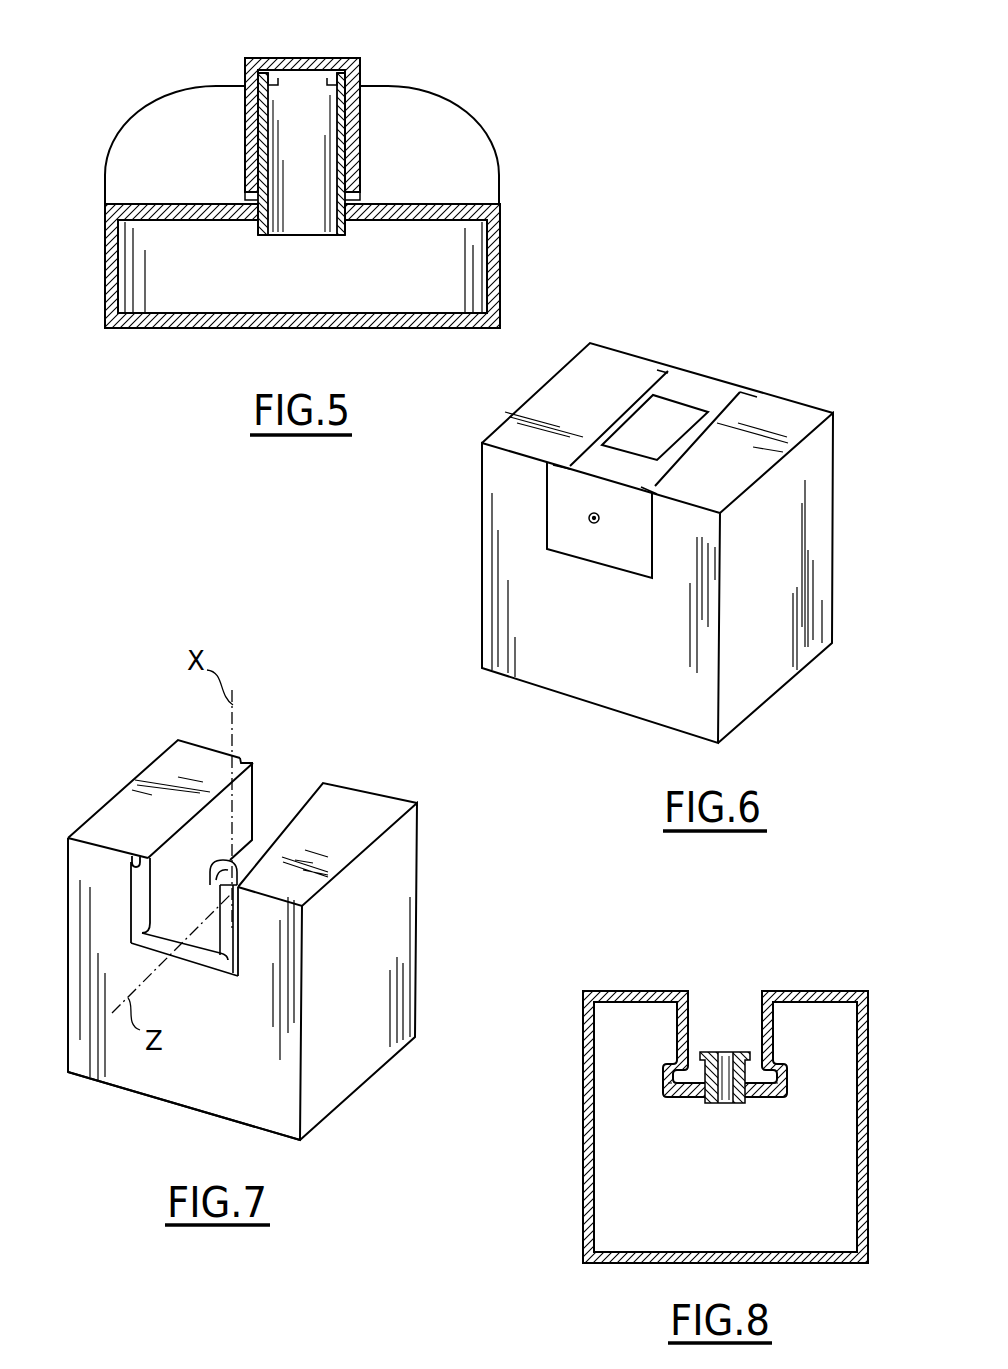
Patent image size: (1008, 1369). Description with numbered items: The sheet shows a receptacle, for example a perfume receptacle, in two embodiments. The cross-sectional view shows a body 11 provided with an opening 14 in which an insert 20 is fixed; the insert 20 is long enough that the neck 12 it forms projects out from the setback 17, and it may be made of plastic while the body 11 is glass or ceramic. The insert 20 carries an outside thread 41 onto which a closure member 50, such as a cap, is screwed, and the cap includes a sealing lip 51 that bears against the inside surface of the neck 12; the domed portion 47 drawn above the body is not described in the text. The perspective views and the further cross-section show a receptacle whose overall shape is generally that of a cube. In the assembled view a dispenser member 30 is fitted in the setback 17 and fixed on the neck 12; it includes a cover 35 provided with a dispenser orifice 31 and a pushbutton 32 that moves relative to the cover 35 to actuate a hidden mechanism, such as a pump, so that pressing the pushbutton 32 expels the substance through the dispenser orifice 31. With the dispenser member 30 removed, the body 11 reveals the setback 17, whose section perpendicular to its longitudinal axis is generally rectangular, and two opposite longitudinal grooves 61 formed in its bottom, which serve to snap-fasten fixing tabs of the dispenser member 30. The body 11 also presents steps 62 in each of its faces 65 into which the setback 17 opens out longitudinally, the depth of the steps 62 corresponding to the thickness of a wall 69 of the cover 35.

In FIG. 5, the body 11 is at (493, 257).
In FIG. 6, the body 11 is at (510, 562).
In FIG. 7, the body 11 is at (287, 1100).
In FIG. 8, the body 11 is at (587, 1183).
In FIG. 7, the neck 12 is at (200, 877).
In FIG. 8, the neck 12 is at (723, 1052).
In FIG. 5, the opening 14 is at (256, 222).
In FIG. 7, the setback 17 is at (187, 925).
In FIG. 8, the setback 17 is at (705, 1013).
In FIG. 5, the insert 20 is at (343, 225).
In FIG. 6, the dispenser member 30 is at (583, 453).
In FIG. 6, the dispenser orifice 31 is at (593, 525).
In FIG. 6, the pushbutton 32 is at (640, 417).
In FIG. 6, the cover 35 is at (627, 463).
In FIG. 5, the outside thread 41 is at (253, 173).
In FIG. 5, the dome cover 47 is at (148, 152).
In FIG. 5, the closure member 50 is at (360, 82).
In FIG. 5, the sealing lip 51 is at (311, 72).
In FIG. 7, the longitudinal grooves 61 is at (140, 932).
In FIG. 8, the longitudinal grooves 61 is at (676, 1076).
In FIG. 7, the steps 62 is at (242, 760).
In FIG. 7, the faces 65 is at (163, 1065).
In FIG. 6, the wall 69 is at (627, 556).